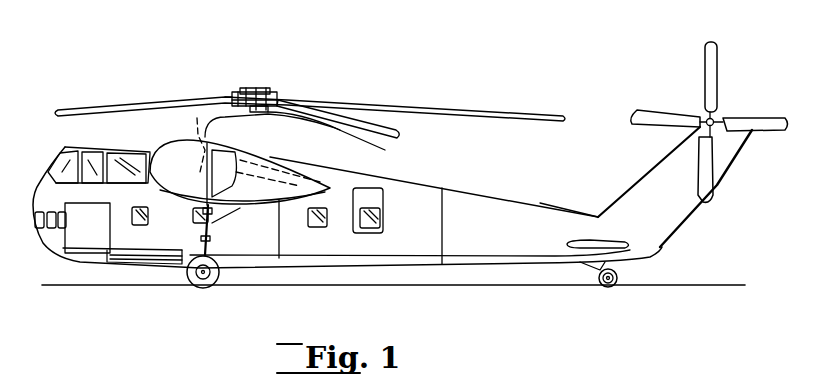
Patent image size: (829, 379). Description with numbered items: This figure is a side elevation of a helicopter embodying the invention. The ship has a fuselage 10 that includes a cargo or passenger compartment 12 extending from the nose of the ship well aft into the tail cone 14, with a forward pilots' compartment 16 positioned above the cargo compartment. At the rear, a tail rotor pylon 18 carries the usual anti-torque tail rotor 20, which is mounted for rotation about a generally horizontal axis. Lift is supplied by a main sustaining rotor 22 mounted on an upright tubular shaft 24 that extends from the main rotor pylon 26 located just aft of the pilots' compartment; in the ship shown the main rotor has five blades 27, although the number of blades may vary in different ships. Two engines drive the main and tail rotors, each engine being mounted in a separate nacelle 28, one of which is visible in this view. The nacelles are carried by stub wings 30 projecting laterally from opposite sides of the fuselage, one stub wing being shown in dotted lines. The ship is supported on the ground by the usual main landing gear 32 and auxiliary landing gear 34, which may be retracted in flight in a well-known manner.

The fuselage 10 is at (462, 194).
The cargo or passenger compartment 12 is at (305, 262).
The tail cone 14 is at (566, 214).
The pilots' compartment 16 is at (64, 165).
The tail rotor pylon 18 is at (693, 206).
The anti-torque tail rotor 20 is at (717, 54).
The main sustaining rotor 22 is at (279, 71).
The upright tubular shaft 24 is at (266, 110).
The main rotor pylon 26 is at (325, 150).
The blades 27 is at (420, 104).
The nacelle 28 is at (178, 146).
The stub wings 30 is at (196, 132).
The main landing gear 32 is at (213, 242).
The auxiliary landing gear 34 is at (596, 270).